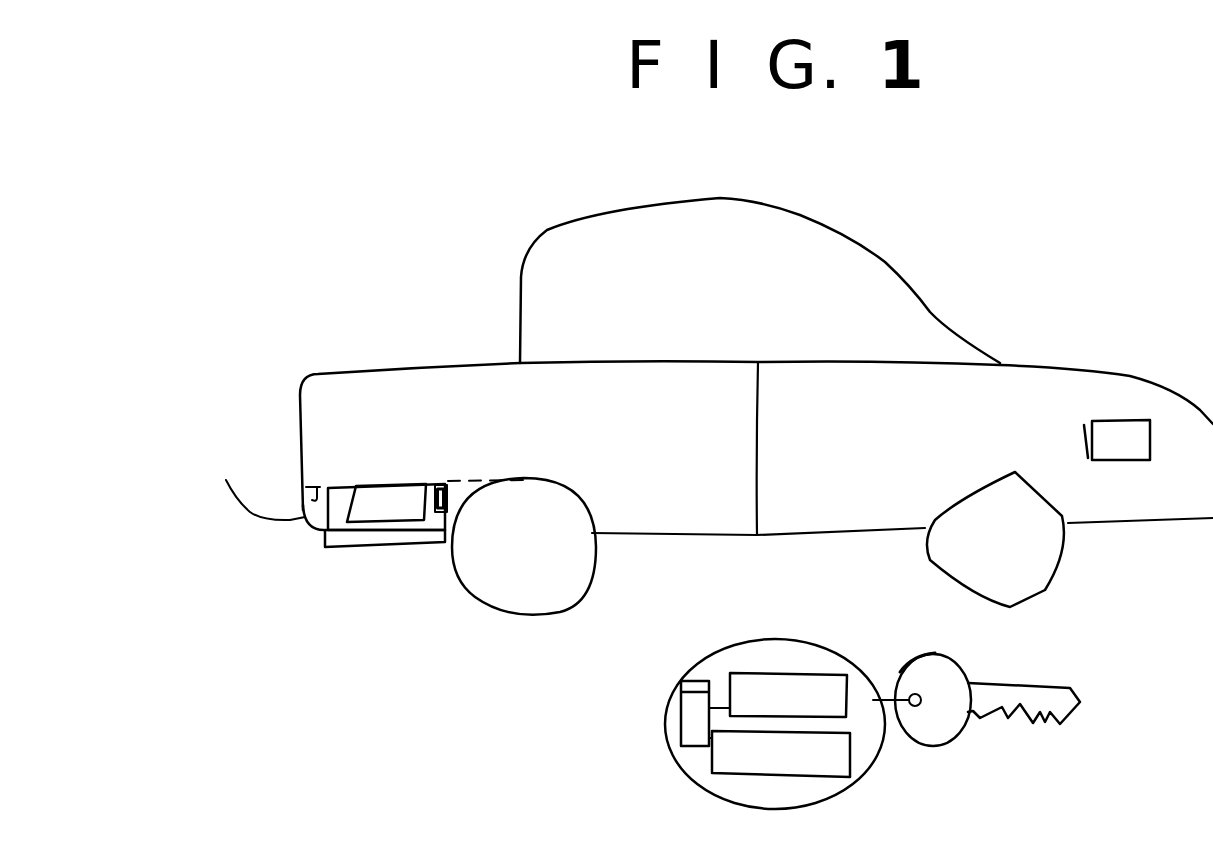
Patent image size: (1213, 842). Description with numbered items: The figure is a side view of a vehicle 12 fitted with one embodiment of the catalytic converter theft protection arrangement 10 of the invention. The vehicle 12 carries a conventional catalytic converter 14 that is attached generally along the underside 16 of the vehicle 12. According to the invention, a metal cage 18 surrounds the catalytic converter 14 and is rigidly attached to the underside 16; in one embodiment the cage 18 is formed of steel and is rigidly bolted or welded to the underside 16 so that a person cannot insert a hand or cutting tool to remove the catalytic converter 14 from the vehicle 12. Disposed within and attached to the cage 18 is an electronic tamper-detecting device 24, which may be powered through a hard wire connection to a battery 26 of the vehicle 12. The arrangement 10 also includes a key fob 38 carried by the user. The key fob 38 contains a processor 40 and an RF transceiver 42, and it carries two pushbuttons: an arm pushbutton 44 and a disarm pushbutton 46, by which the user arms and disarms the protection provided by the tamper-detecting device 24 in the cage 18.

The catalytic converter theft protection arrangement 10 is at (1046, 172).
The vehicle 12 is at (878, 412).
The catalytic converter 14 is at (387, 487).
The underside 16 is at (597, 447).
The metal cage 18 is at (405, 548).
The electronic tamper-detecting device 24 is at (445, 480).
The battery 26 is at (1117, 440).
The key fob 38 is at (865, 748).
The processor 40 is at (688, 725).
The RF transceiver 42 is at (697, 680).
The arm pushbutton 44 is at (800, 677).
The disarm pushbutton 46 is at (760, 768).